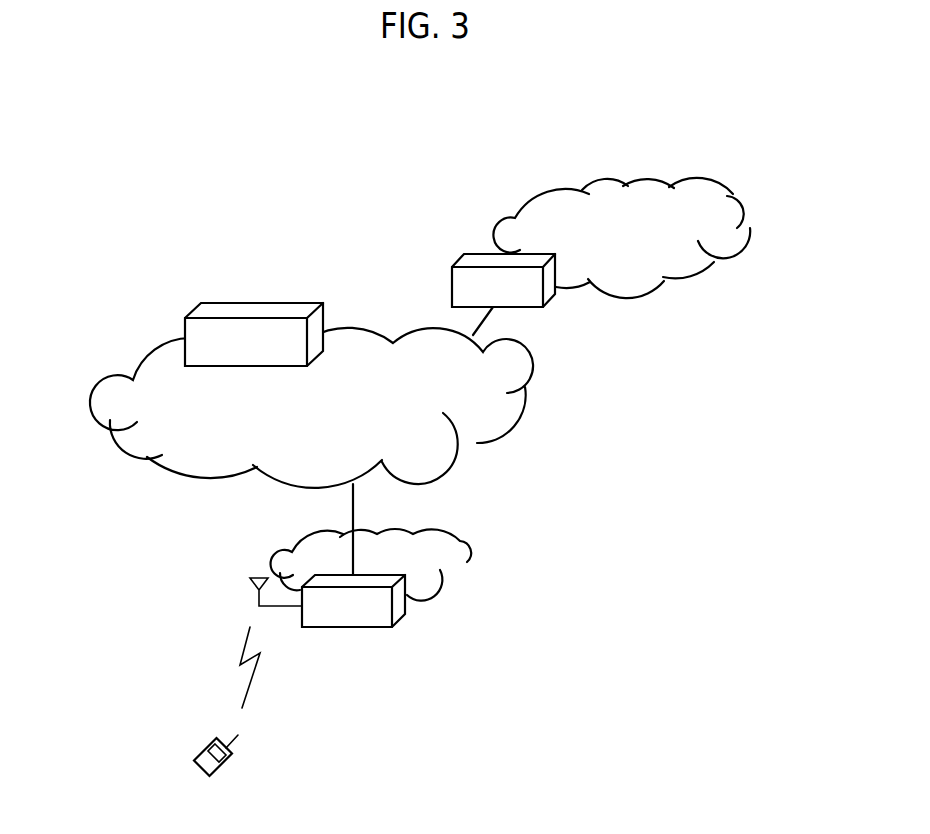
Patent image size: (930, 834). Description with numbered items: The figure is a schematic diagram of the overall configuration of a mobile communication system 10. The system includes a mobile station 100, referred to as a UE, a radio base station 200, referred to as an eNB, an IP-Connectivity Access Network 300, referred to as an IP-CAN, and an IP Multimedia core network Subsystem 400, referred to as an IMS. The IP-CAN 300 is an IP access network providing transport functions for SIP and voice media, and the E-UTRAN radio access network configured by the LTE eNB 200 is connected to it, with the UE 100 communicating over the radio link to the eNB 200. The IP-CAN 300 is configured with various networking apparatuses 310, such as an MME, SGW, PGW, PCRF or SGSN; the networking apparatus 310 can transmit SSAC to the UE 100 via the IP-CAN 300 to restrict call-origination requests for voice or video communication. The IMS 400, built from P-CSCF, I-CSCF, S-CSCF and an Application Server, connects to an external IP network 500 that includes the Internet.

The mobile communication system 10 is at (332, 200).
The mobile station 100 is at (224, 767).
The radio base station 200 is at (358, 628).
The IP-Connectivity Access Network 300 is at (538, 404).
The networking apparatus 310 is at (271, 303).
The IP Multimedia core network Subsystem 400 is at (478, 254).
The IP network 500 is at (738, 198).